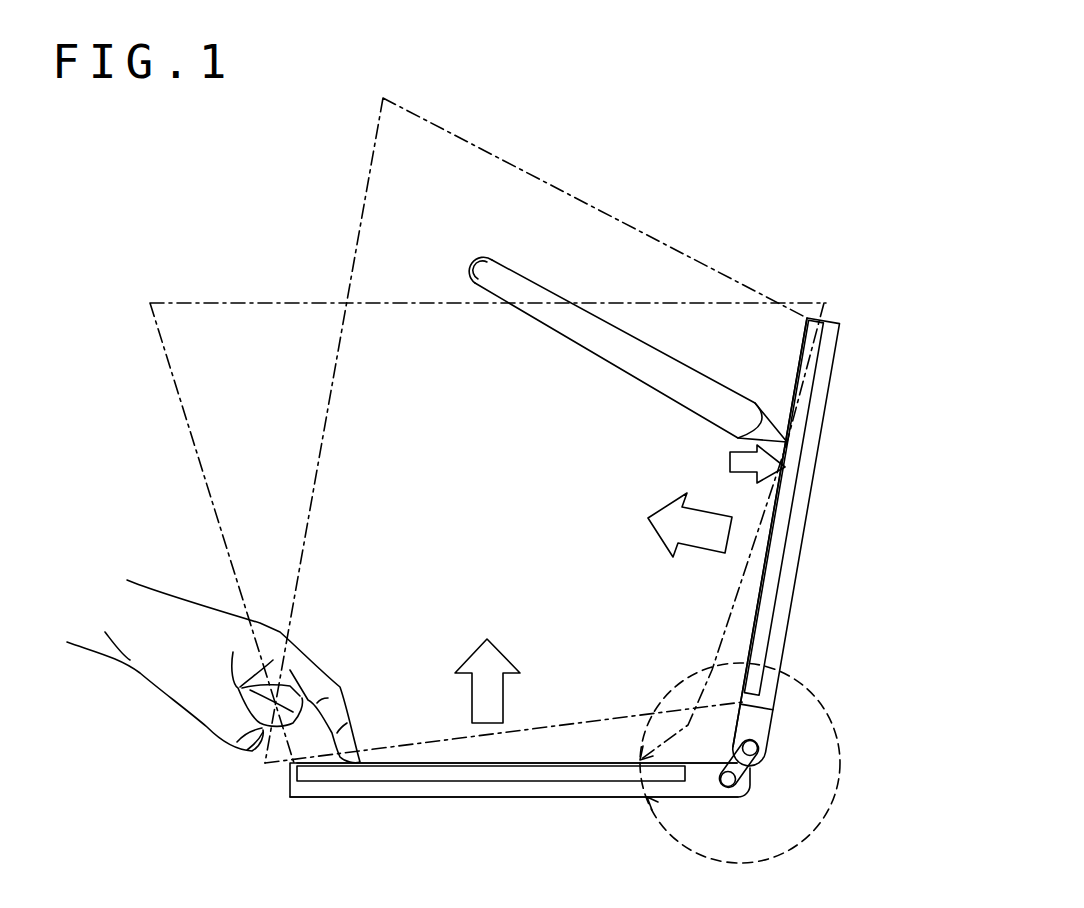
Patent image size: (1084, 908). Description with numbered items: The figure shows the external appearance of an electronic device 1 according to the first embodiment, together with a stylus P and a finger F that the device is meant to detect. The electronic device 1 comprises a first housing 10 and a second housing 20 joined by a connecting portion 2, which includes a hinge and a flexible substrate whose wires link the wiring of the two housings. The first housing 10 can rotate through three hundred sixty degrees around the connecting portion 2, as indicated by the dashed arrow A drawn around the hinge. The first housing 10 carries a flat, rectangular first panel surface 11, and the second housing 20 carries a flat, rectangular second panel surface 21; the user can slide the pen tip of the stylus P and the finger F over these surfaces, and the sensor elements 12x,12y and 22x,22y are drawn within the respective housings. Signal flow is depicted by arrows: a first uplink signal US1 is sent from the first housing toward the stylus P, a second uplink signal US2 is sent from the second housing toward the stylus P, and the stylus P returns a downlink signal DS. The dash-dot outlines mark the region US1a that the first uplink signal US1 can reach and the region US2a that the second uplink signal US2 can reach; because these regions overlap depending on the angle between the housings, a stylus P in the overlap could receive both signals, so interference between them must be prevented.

The electronic device 1 is at (565, 797).
The connecting portion 2 is at (750, 765).
The first housing 10 is at (783, 619).
The first panel surface 11 is at (754, 628).
The display / touch sensor 12x,12y is at (783, 564).
The second housing 20 is at (496, 797).
The second panel surface 21 is at (557, 763).
The touch pad / sensor 22x,22y is at (375, 782).
The dashed arrow A is at (752, 763).
The stylus P is at (688, 372).
The finger F is at (343, 722).
The downlink signal DS is at (777, 466).
The first uplink signal US1 is at (648, 518).
The second uplink signal US2 is at (498, 657).
The region US1a is at (508, 162).
The region US2a is at (253, 303).